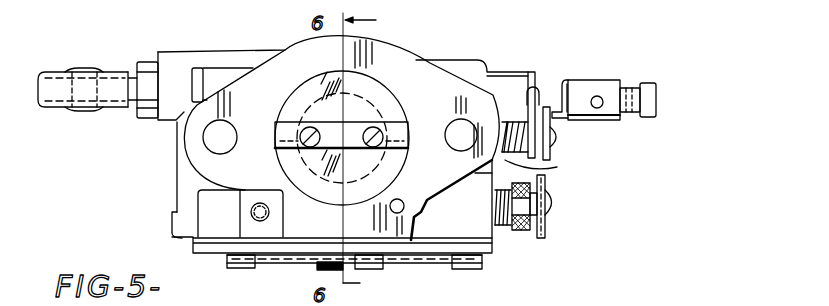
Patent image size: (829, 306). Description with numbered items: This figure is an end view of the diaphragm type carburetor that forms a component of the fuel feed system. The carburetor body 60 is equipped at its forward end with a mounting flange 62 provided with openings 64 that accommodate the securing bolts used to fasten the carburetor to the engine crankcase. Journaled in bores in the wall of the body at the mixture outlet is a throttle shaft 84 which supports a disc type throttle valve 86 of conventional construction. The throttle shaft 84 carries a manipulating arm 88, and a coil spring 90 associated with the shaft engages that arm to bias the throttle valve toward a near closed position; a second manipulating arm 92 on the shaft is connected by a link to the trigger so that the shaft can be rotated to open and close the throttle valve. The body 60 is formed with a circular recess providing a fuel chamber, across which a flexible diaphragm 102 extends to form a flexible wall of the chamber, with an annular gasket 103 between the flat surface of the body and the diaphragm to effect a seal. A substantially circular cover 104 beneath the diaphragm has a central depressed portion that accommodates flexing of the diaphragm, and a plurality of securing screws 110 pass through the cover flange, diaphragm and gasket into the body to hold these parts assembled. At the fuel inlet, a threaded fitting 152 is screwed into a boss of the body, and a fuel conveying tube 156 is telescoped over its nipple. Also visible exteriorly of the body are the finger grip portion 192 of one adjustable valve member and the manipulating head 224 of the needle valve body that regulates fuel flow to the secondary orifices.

The carburetor body 60 is at (258, 47).
The mounting flange 62 is at (385, 59).
The openings 64 is at (212, 145).
The throttle valve shaft 84 is at (545, 168).
The throttle valve 86 is at (313, 190).
The manipulating arm 88 is at (548, 155).
The coil spring 90 is at (519, 104).
The manipulating arm 92 is at (556, 82).
The diaphragm 102 is at (487, 239).
The annular gasket 103 is at (170, 213).
The cover 104 is at (291, 265).
The securing screws 110 is at (238, 266).
The fitting 152 is at (163, 37).
The fuel conveying tube 156 is at (88, 52).
The finger grip portion 192 is at (547, 220).
The manipulating head 224 is at (530, 226).